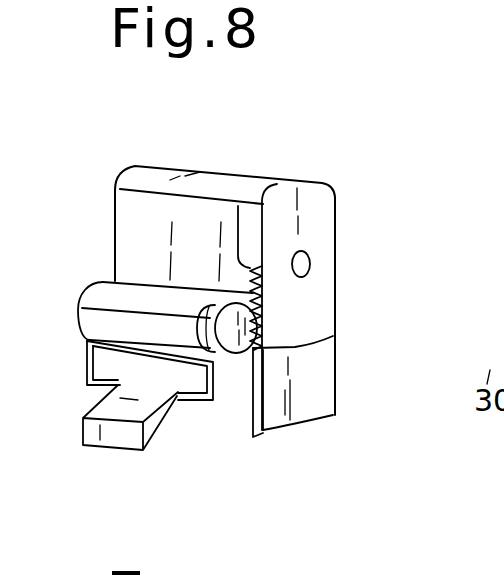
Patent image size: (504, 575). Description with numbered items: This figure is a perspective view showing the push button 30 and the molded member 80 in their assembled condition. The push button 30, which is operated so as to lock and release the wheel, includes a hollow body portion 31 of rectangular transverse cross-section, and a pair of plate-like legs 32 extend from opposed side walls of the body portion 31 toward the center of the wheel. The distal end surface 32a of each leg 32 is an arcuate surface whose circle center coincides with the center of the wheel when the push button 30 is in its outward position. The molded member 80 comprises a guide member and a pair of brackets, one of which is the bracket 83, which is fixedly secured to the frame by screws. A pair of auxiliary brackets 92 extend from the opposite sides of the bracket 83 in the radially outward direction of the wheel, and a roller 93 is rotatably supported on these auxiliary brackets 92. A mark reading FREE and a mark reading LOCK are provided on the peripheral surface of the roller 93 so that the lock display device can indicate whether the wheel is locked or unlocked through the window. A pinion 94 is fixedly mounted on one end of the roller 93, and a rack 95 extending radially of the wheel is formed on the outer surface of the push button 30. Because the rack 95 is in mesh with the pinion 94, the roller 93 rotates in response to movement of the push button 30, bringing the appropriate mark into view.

The push button 30 is at (337, 193).
The body portion 31 is at (280, 176).
The legs 32 is at (315, 398).
The distal end surface 32a is at (298, 420).
The molded member 80 is at (208, 394).
The bracket 83 is at (113, 438).
The auxiliary brackets 92 is at (90, 363).
The roller 93 is at (84, 293).
The pinion 94 is at (333, 336).
The rack 95 is at (243, 203).